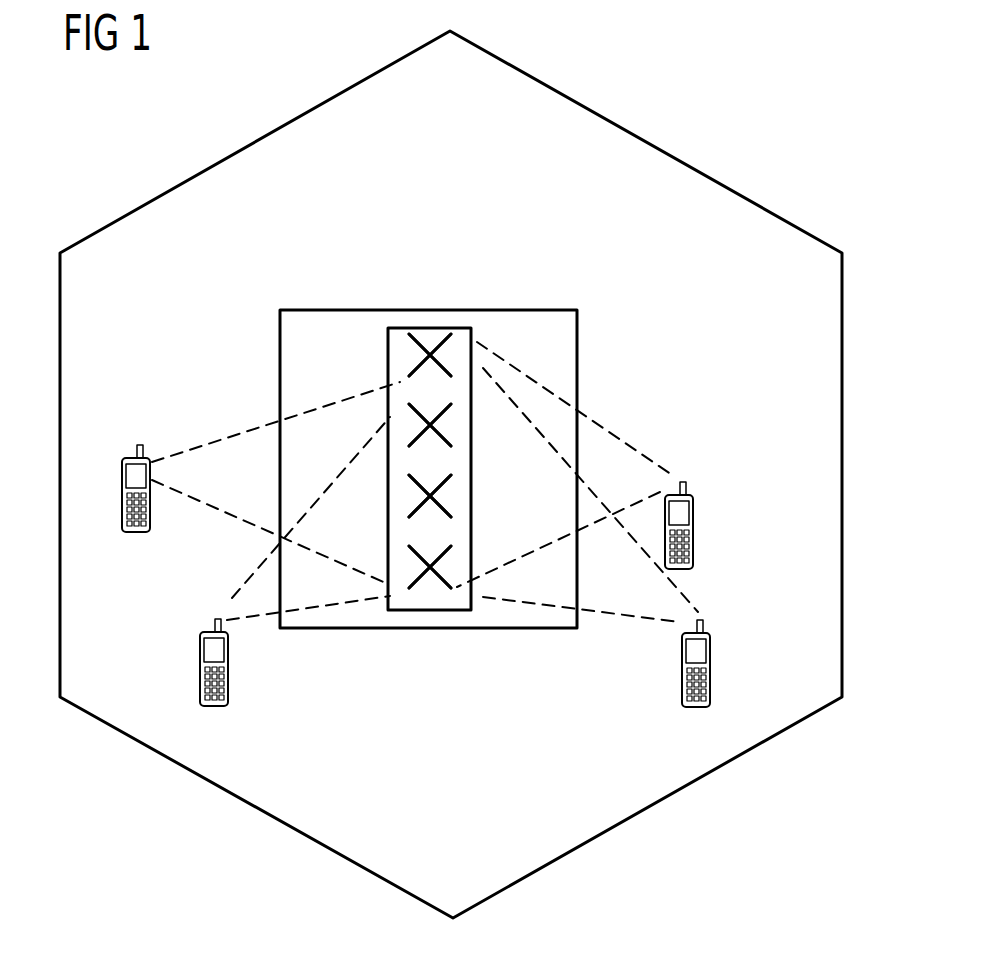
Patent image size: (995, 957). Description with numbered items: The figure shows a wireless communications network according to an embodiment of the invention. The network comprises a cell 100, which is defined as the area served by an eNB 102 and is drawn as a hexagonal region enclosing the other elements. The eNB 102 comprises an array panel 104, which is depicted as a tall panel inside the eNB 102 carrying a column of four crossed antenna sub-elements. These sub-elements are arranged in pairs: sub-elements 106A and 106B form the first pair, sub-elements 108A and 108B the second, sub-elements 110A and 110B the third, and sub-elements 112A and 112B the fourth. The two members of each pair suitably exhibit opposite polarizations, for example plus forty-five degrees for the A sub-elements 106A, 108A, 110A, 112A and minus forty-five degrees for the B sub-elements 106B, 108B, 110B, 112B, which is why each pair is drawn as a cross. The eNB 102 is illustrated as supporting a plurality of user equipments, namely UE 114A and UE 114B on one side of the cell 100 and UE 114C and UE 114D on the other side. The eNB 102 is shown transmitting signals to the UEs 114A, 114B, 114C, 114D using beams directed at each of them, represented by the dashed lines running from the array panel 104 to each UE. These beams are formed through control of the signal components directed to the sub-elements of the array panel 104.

The cell 100 is at (681, 92).
The eNB 102 is at (333, 309).
The array panel 104 is at (425, 327).
The sub-element 106A is at (414, 372).
The sub-element 106B is at (452, 340).
The sub-element 108A is at (412, 444).
The sub-element 108B is at (452, 444).
The sub-element 110A is at (411, 510).
The sub-element 110B is at (452, 514).
The sub-element 112A is at (416, 582).
The sub-element 112B is at (436, 582).
The UE 114A is at (138, 533).
The UE 114B is at (200, 668).
The UE 114C is at (693, 531).
The UE 114D is at (710, 670).